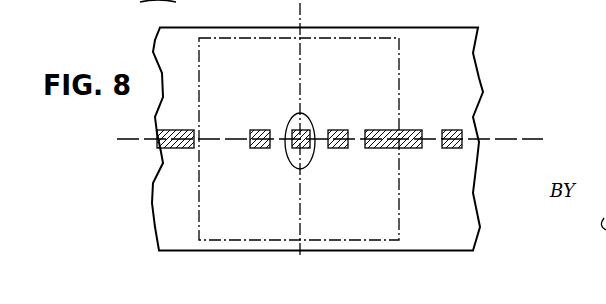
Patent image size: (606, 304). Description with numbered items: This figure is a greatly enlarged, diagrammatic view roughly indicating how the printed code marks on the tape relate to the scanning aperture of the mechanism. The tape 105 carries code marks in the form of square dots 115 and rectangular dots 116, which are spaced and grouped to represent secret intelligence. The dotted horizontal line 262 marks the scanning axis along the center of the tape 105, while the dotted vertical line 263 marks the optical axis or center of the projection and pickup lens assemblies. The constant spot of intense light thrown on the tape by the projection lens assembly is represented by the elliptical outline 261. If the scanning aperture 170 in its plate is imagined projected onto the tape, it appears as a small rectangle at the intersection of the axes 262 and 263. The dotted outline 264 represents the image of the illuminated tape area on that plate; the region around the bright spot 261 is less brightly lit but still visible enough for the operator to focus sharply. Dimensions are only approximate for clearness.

The tape 105 is at (465, 90).
The square dots 115 is at (262, 150).
The rectangular dots 116 is at (387, 150).
The scanning aperture 170 is at (292, 131).
The elliptical outline 261 is at (308, 122).
The dotted horizontal line 262 is at (528, 140).
The dotted vertical line 263 is at (302, 55).
The dotted outline 264 is at (400, 62).